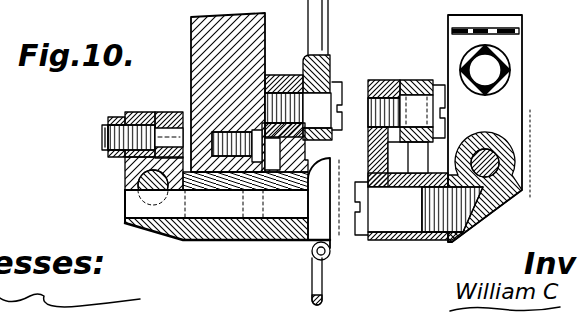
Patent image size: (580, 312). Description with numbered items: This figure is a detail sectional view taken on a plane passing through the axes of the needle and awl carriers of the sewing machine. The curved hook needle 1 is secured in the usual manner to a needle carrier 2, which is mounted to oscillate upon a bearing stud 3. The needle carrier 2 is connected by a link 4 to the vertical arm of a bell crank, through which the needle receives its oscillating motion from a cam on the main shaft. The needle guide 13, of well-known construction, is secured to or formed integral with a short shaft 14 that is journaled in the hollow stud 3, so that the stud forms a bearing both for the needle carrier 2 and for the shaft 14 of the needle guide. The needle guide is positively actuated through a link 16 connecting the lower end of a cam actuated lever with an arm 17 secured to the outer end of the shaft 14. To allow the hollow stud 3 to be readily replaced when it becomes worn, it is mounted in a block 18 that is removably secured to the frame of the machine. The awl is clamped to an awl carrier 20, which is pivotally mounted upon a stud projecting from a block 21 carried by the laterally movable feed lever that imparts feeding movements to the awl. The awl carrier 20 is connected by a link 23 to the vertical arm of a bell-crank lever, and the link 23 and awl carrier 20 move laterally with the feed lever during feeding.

The curved hook needle 1 is at (322, 297).
The needle carrier 2 is at (302, 157).
The bearing stud 3 is at (286, 232).
The link 4 is at (323, 30).
The needle guide 13 is at (330, 250).
The short shaft 14 is at (170, 205).
The link 16 is at (168, 118).
The arm 17 is at (133, 157).
The block 18 is at (218, 236).
The awl carrier 20 is at (383, 82).
The block 21 is at (503, 113).
The link 23 is at (415, 85).